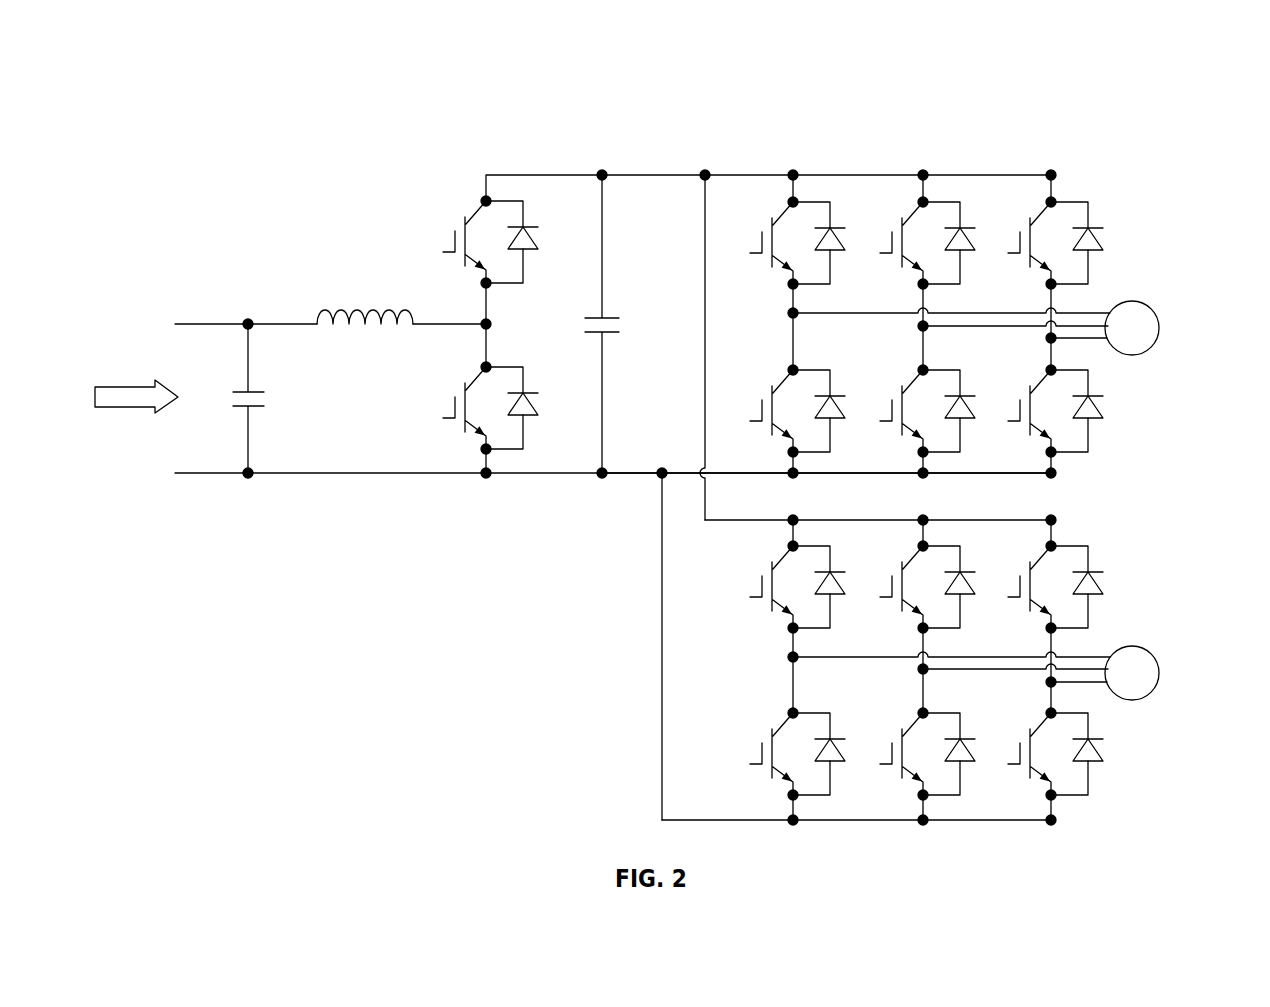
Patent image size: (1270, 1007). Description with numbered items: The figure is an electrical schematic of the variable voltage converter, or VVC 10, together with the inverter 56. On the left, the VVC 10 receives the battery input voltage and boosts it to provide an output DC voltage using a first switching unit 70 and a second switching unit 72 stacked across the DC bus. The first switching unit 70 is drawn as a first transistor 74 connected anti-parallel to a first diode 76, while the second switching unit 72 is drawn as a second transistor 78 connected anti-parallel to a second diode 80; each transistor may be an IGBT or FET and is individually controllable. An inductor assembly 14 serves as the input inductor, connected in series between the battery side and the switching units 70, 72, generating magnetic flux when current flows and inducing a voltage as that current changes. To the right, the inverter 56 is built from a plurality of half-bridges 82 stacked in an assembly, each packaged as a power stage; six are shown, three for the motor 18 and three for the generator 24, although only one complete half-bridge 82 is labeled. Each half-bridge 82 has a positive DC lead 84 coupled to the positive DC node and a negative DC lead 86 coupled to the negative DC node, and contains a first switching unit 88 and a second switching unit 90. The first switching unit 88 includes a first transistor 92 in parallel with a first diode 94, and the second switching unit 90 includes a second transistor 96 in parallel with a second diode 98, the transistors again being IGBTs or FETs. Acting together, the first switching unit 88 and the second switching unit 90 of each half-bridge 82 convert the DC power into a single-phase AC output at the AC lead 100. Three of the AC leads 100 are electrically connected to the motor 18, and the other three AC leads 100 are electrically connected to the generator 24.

The variable voltage converter 10 is at (419, 303).
The inductor assembly 14 is at (345, 306).
The motor 18 is at (1160, 328).
The generator 24 is at (1160, 672).
The inverter 56 is at (920, 427).
The first switching unit 70 is at (480, 228).
The second switching unit 72 is at (482, 397).
The first transistor 74 is at (449, 250).
The first diode 76 is at (532, 245).
The second transistor 78 is at (447, 417).
The second diode 80 is at (532, 410).
The half-bridge 82 is at (893, 279).
The positive DC lead 84 is at (793, 171).
The negative DC lead 86 is at (797, 477).
The first switching unit 88 is at (786, 221).
The second switching unit 90 is at (801, 399).
The first transistor 92 is at (760, 235).
The first diode 94 is at (836, 240).
The second transistor 96 is at (760, 402).
The second diode 98 is at (836, 410).
The AC lead 100 is at (798, 310).